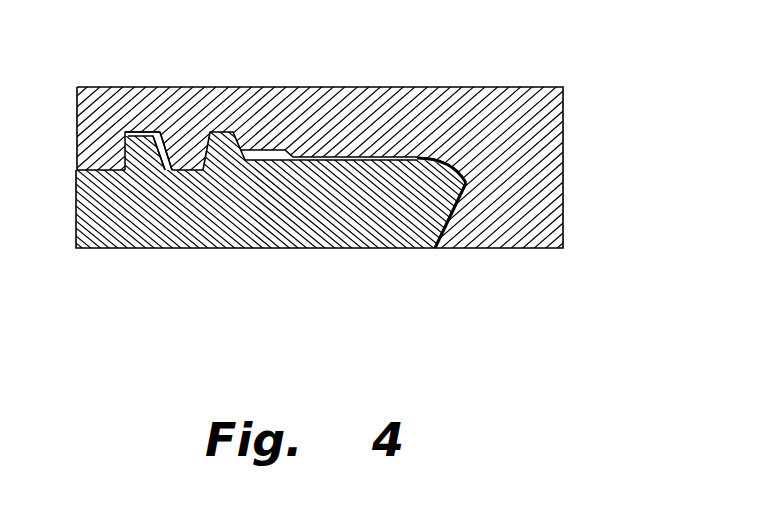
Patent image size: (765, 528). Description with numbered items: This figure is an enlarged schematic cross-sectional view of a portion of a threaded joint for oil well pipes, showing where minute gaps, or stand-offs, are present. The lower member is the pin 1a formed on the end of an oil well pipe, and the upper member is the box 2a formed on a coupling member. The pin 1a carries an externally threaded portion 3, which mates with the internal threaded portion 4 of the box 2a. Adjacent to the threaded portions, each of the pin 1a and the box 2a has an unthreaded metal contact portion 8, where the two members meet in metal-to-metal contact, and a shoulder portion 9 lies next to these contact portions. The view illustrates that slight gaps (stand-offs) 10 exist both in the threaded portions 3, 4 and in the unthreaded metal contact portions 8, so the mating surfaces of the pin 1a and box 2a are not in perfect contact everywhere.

The pin 1a is at (238, 222).
The box 2a is at (373, 100).
The externally threaded portion 3 is at (147, 153).
The internal threaded portion 4 is at (148, 132).
The unthreaded metal contact portion 8 is at (442, 160).
The shoulder portion 9 is at (452, 216).
The gaps (stand-offs) 10 is at (168, 144).